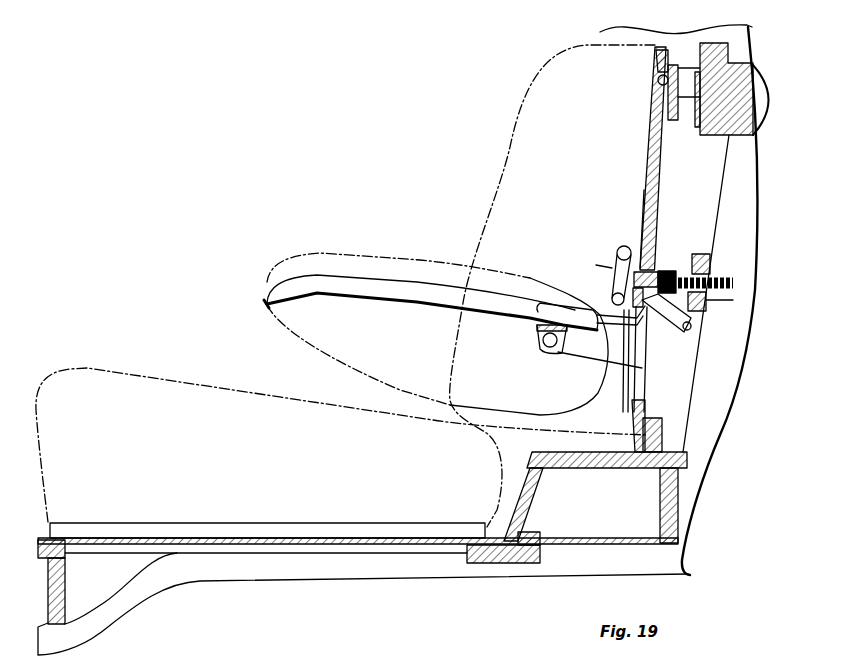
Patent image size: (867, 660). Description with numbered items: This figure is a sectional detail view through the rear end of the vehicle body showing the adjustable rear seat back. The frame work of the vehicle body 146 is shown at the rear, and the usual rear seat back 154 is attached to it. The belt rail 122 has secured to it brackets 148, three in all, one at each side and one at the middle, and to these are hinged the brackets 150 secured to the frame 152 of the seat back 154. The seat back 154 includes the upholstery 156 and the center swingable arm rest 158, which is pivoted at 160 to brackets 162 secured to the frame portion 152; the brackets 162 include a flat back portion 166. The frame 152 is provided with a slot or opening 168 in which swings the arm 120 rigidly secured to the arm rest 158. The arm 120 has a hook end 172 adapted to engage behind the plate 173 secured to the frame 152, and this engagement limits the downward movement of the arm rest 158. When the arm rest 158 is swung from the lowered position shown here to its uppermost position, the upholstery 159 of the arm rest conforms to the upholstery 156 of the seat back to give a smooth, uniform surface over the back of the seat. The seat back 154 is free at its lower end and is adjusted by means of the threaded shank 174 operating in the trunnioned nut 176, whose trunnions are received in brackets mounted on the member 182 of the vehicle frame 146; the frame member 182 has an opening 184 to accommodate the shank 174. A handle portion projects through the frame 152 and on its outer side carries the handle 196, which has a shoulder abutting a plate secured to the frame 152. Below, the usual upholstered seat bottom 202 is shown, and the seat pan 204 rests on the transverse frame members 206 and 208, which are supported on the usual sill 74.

The sill 74 is at (558, 575).
The arm 120 is at (610, 308).
The belt rail 122 is at (752, 68).
The frame work of the vehicle body 146 is at (720, 390).
The brackets 148 is at (698, 123).
The brackets 150 is at (682, 87).
The frame of the seat back 152 is at (653, 143).
The rear seat back 154 is at (641, 230).
The upholstery 156 is at (527, 147).
The arm rest 158 is at (407, 287).
The upholstery of the arm rest 159 is at (330, 345).
The pivot 160 is at (543, 345).
The brackets 162 is at (590, 358).
The flat back portion 166 is at (623, 400).
The slot or opening 168 is at (640, 378).
The hook end 172 is at (644, 323).
The plate 173 is at (614, 280).
The threaded shank 174 is at (733, 287).
The trunnioned nut 176 is at (668, 272).
The member of the vehicle frame 182 is at (710, 262).
The opening 184 is at (672, 288).
The handle 196 is at (617, 251).
The upholstered seat bottom 202 is at (194, 397).
The seat pan 204 is at (212, 533).
The transverse frame member 206 is at (486, 565).
The transverse frame member 208 is at (67, 583).